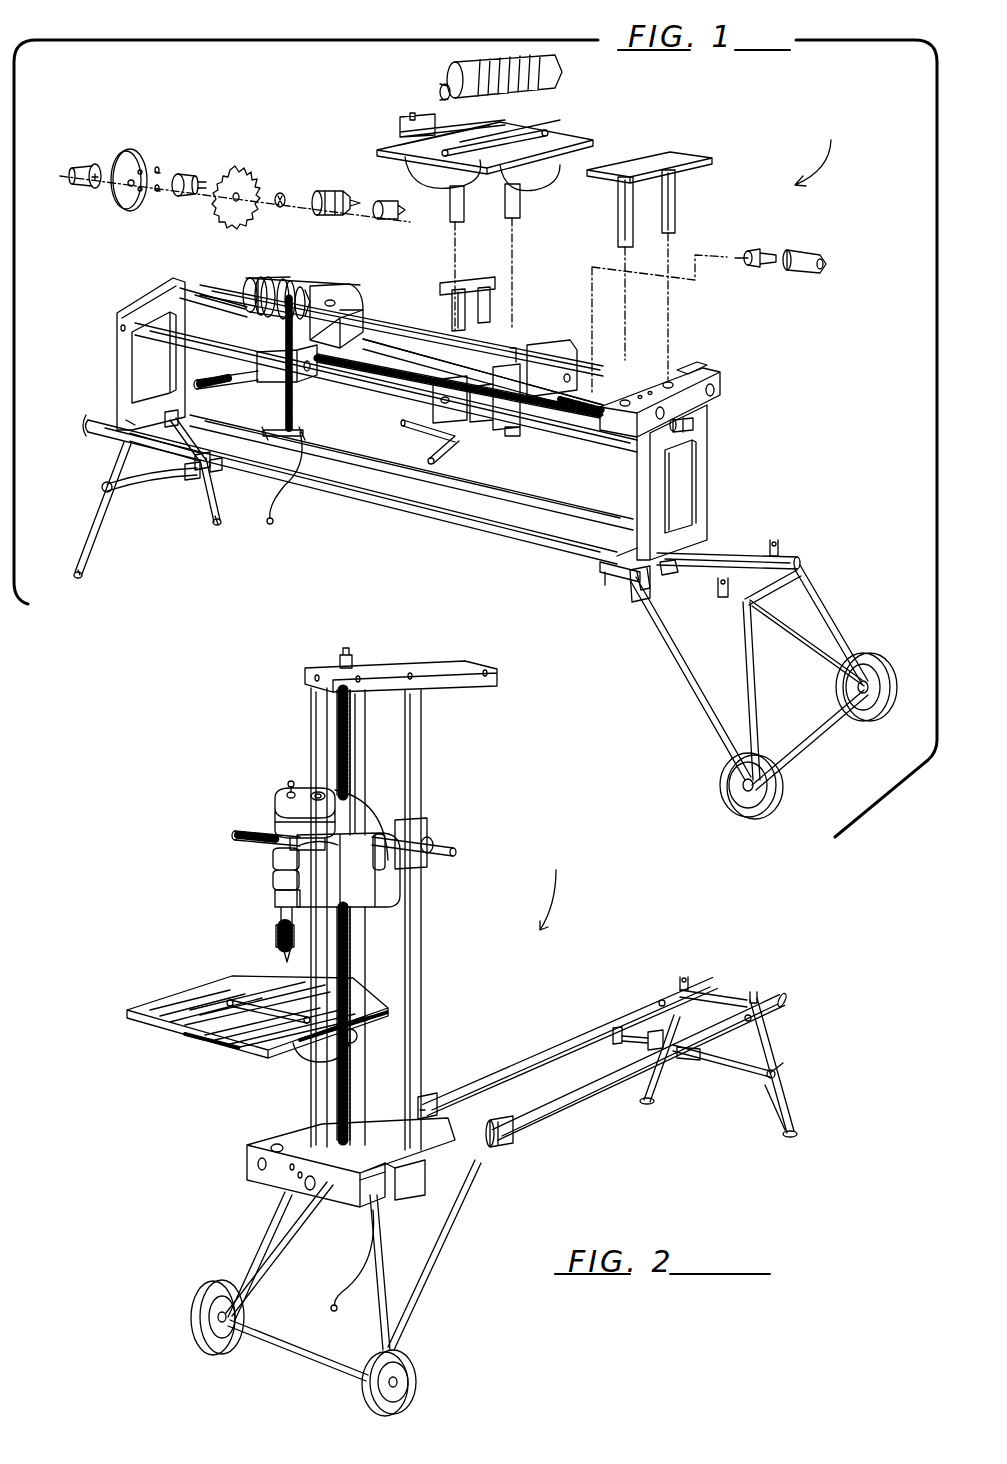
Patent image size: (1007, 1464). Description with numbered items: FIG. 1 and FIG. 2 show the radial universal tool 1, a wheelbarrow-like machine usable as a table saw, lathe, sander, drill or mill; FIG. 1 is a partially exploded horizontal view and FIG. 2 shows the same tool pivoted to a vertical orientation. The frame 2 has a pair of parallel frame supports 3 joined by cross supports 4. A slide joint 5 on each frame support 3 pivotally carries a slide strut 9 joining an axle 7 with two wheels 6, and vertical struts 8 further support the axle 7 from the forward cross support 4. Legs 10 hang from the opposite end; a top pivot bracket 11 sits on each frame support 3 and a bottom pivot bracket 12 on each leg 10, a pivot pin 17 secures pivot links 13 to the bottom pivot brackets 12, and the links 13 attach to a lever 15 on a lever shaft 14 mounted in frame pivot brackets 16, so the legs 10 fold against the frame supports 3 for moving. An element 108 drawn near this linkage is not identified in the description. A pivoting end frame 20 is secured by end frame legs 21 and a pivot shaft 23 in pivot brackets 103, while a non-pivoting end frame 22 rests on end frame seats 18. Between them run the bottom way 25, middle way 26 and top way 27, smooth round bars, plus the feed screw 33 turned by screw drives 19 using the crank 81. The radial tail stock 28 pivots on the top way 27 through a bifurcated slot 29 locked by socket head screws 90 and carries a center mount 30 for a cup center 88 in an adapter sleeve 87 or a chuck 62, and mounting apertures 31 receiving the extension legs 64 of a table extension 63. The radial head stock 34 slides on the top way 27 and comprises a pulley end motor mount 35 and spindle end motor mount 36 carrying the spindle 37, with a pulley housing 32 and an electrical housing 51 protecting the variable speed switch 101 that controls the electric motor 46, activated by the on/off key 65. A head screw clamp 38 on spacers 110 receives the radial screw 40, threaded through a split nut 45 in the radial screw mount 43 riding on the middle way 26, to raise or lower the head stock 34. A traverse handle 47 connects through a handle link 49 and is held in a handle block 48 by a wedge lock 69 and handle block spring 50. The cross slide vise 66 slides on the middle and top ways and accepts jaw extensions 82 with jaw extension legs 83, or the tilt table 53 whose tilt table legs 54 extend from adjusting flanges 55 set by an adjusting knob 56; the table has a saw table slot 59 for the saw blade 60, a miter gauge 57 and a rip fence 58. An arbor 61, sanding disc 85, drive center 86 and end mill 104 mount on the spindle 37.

In FIG. 1, the radial universal tool 1 is at (816, 150).
In FIG. 2, the radial universal tool 1 is at (551, 887).
In FIG. 1, the frame 2 is at (753, 542).
In FIG. 2, the frame 2 is at (492, 1063).
In FIG. 1, the frame supports 3 is at (545, 512).
In FIG. 2, the frame supports 3 is at (545, 1050).
In FIG. 1, the cross supports 4 is at (150, 447).
In FIG. 2, the cross supports 4 is at (735, 996).
In FIG. 1, the slide joint 5 is at (598, 568).
In FIG. 2, the slide joint 5 is at (422, 1096).
In FIG. 1, the wheels 6 is at (875, 715).
In FIG. 2, the wheels 6 is at (198, 1298).
In FIG. 1, the axle 7 is at (818, 745).
In FIG. 2, the axle 7 is at (300, 1355).
In FIG. 1, the vertical struts 8 is at (826, 610).
In FIG. 2, the vertical struts 8 is at (255, 1245).
In FIG. 1, the slide strut 9 is at (800, 645).
In FIG. 2, the slide strut 9 is at (300, 1255).
In FIG. 1, the legs 10 is at (205, 518).
In FIG. 2, the legs 10 is at (770, 1055).
In FIG. 1, the top pivot bracket 11 is at (96, 428).
In FIG. 2, the top pivot bracket 11 is at (662, 998).
In FIG. 1, the bottom pivot bracket 12 is at (112, 500).
In FIG. 2, the bottom pivot bracket 12 is at (765, 1085).
In FIG. 1, the pivot links 13 is at (135, 490).
In FIG. 2, the pivot links 13 is at (735, 1075).
In FIG. 1, the lever shaft 14 is at (242, 468).
In FIG. 2, the lever shaft 14 is at (622, 1042).
In FIG. 1, the lever 15 is at (246, 466).
In FIG. 2, the lever 15 is at (694, 1062).
In FIG. 1, the frame pivot brackets 16 is at (232, 448).
In FIG. 2, the frame pivot brackets 16 is at (616, 1027).
In FIG. 1, the pivot pin 17 is at (106, 491).
In FIG. 2, the pivot pin 17 is at (778, 1074).
In FIG. 1, the end frame seats 18 is at (780, 540).
In FIG. 2, the end frame seats 18 is at (688, 977).
In FIG. 1, the screw drives 19 is at (695, 428).
In FIG. 2, the screw drives 19 is at (352, 652).
In FIG. 1, the pivoting end frame 20 is at (720, 474).
In FIG. 2, the pivoting end frame 20 is at (420, 1194).
In FIG. 1, the end frame legs 21 is at (130, 420).
In FIG. 2, the end frame legs 21 is at (485, 686).
In FIG. 1, the non-pivoting end frame 22 is at (96, 365).
In FIG. 2, the non-pivoting end frame 22 is at (451, 661).
In FIG. 1, the pivot shaft 23 is at (672, 578).
In FIG. 1, the bottom way 25 is at (580, 420).
In FIG. 2, the bottom way 25 is at (422, 740).
In FIG. 1, the middle way 26 is at (380, 395).
In FIG. 2, the middle way 26 is at (310, 690).
In FIG. 1, the top way 27 is at (625, 400).
In FIG. 2, the top way 27 is at (380, 730).
In FIG. 1, the radial tail stock 28 is at (752, 362).
In FIG. 2, the radial tail stock 28 is at (235, 1151).
In FIG. 1, the bifurcated slot 29 is at (698, 360).
In FIG. 2, the bifurcated slot 29 is at (355, 1195).
In FIG. 1, the center mount 30 is at (665, 415).
In FIG. 2, the center mount 30 is at (274, 1146).
In FIG. 1, the mounting apertures 31 is at (668, 382).
In FIG. 2, the mounting apertures 31 is at (305, 1183).
In FIG. 1, the pulley housing 32 is at (252, 280).
In FIG. 2, the pulley housing 32 is at (352, 812).
In FIG. 1, the feed screw 33 is at (418, 375).
In FIG. 2, the feed screw 33 is at (336, 722).
In FIG. 1, the radial head stock 34 is at (333, 275).
In FIG. 2, the radial head stock 34 is at (260, 797).
In FIG. 1, the pulley end motor mount 35 is at (268, 277).
In FIG. 2, the pulley end motor mount 35 is at (275, 824).
In FIG. 1, the spindle end motor mount 36 is at (364, 304).
In FIG. 2, the spindle end motor mount 36 is at (275, 900).
In FIG. 1, the spindle 37 is at (352, 290).
In FIG. 1, the head screw clamp 38 is at (290, 280).
In FIG. 2, the head screw clamp 38 is at (273, 870).
In FIG. 1, the radial screw 40 is at (305, 432).
In FIG. 1, the radial screw mount 43 is at (258, 368).
In FIG. 1, the split nut 45 is at (294, 395).
In FIG. 2, the electric motor 46 is at (330, 888).
In FIG. 1, the traverse handle 47 is at (200, 384).
In FIG. 2, the traverse handle 47 is at (240, 842).
In FIG. 2, the handle block 48 is at (448, 845).
In FIG. 2, the handle link 49 is at (388, 868).
In FIG. 2, the handle block spring 50 is at (430, 828).
In FIG. 1, the electrical housing 51 is at (240, 290).
In FIG. 1, the tilt table 53 is at (574, 123).
In FIG. 2, the tilt table 53 is at (165, 990).
In FIG. 1, the tilt table legs 54 is at (468, 220).
In FIG. 1, the adjusting flanges 55 is at (408, 160).
In FIG. 2, the adjusting flanges 55 is at (296, 1050).
In FIG. 1, the adjusting knob 56 is at (446, 215).
In FIG. 2, the adjusting knob 56 is at (358, 1036).
In FIG. 1, the miter gauge 57 is at (432, 118).
In FIG. 1, the rip fence 58 is at (562, 72).
In FIG. 1, the saw table slot 59 is at (505, 140).
In FIG. 2, the saw table slot 59 is at (240, 1000).
In FIG. 1, the saw blade 60 is at (234, 170).
In FIG. 1, the arbor 61 is at (96, 165).
In FIG. 2, the arbor 61 is at (274, 938).
In FIG. 1, the chuck 62 is at (322, 194).
In FIG. 2, the chuck 62 is at (284, 956).
In FIG. 1, the table extension 63 is at (690, 152).
In FIG. 1, the extension legs 64 is at (678, 195).
In FIG. 2, the on/off key 65 is at (287, 785).
In FIG. 1, the cross slide vise 66 is at (583, 326).
In FIG. 2, the wedge lock 69 is at (435, 850).
In FIG. 1, the crank 81 is at (460, 445).
In FIG. 1, the jaw extensions 82 is at (480, 280).
In FIG. 1, the jaw extension legs 83 is at (492, 330).
In FIG. 1, the sanding disc 85 is at (140, 163).
In FIG. 1, the drive center 86 is at (380, 205).
In FIG. 1, the adapter sleeve 87 is at (806, 252).
In FIG. 1, the cup center 88 is at (757, 252).
In FIG. 1, the socket head screws 90 is at (270, 330).
In FIG. 2, the socket head screws 90 is at (352, 1260).
In FIG. 2, the variable speed switch 101 is at (314, 790).
In FIG. 1, the pivot brackets 103 is at (640, 604).
In FIG. 2, the pivot brackets 103 is at (420, 1170).
In FIG. 1, the end mill 104 is at (400, 322).
In FIG. 1, the fitting 108 is at (190, 482).
In FIG. 1, the spacers 110 is at (306, 288).